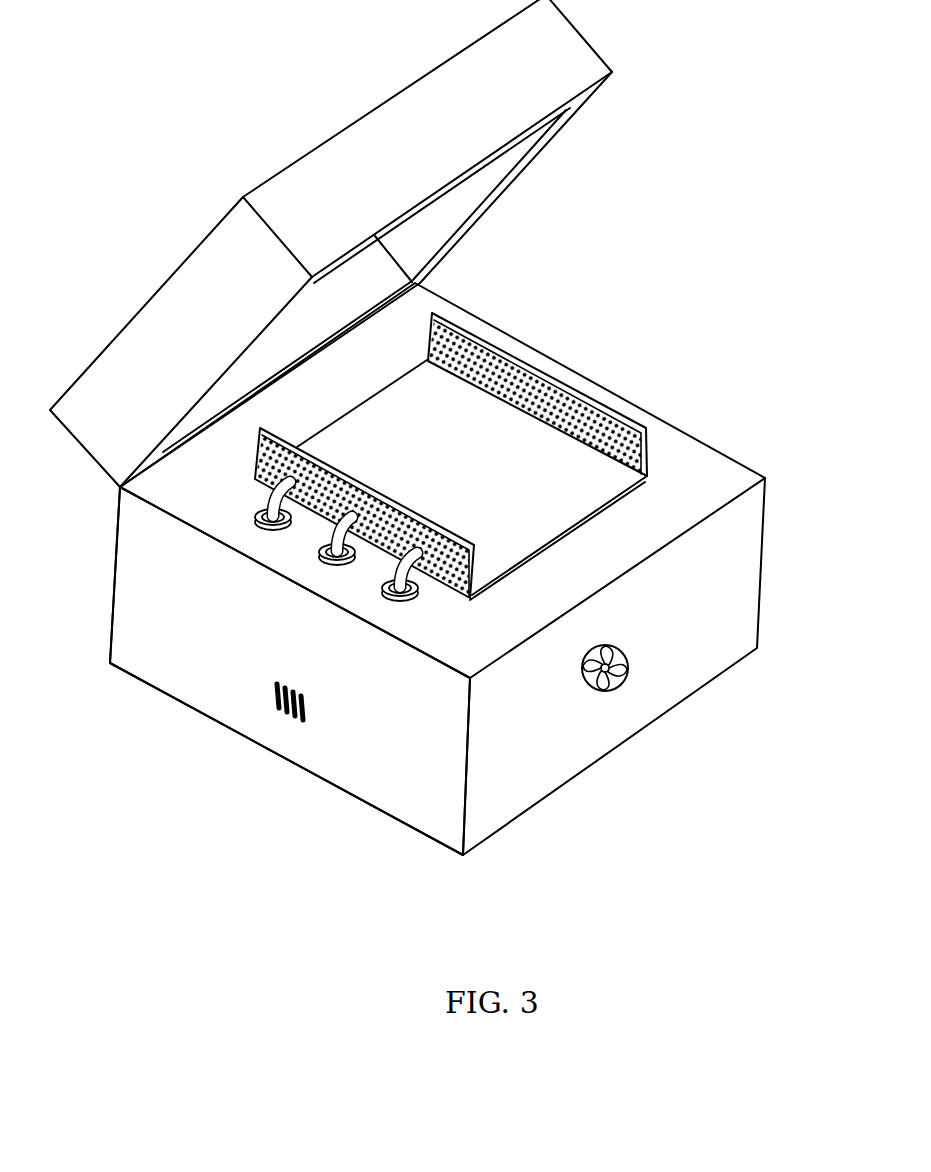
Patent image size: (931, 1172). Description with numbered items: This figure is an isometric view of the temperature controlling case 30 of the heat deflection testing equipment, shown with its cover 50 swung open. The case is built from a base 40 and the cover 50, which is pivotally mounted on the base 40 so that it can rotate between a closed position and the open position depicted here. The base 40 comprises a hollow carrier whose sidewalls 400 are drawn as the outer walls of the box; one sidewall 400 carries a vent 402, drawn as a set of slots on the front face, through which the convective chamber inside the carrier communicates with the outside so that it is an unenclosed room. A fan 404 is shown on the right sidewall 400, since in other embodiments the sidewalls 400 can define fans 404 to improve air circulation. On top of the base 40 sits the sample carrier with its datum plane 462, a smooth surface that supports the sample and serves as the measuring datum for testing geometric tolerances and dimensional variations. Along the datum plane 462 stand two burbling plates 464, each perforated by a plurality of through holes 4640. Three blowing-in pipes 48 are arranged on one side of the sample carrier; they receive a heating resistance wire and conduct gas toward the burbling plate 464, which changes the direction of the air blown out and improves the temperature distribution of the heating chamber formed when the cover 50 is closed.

The temperature controlling case 30 is at (642, 232).
The base 40 is at (718, 632).
The sidewalls 400 is at (402, 763).
The vent 402 is at (273, 698).
The fans 404 is at (623, 677).
The datum plane 462 is at (572, 482).
The burbling plate 464 is at (587, 400).
The through holes 4640 is at (647, 416).
The blowing-in pipes 48 is at (265, 502).
The cover 50 is at (177, 338).